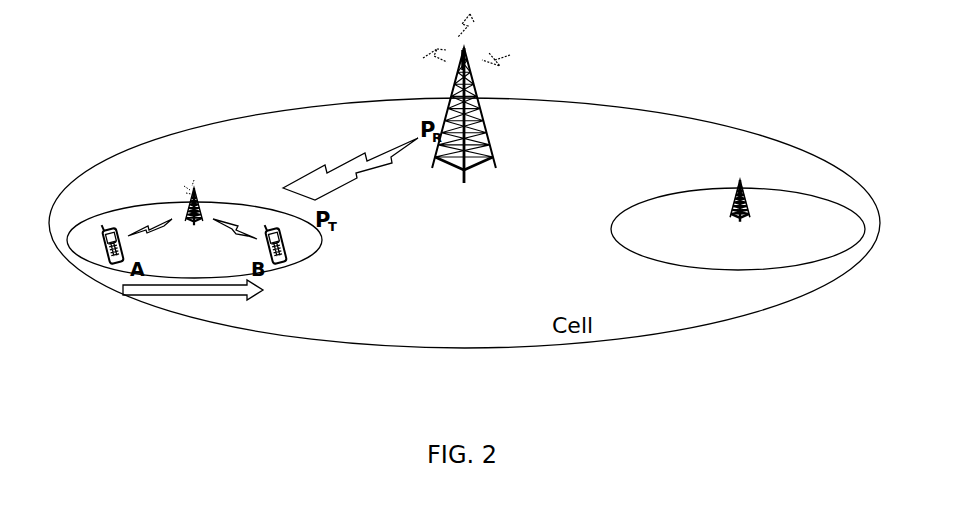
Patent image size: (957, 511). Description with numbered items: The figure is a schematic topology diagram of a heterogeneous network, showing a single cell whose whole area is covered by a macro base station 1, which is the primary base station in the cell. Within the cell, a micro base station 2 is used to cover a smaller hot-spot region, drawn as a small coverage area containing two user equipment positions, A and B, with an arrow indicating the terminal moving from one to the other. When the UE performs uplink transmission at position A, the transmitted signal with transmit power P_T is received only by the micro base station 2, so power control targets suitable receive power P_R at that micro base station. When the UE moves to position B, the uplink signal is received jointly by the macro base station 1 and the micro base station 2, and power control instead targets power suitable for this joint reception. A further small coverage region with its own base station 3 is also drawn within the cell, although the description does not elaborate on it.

The macro base station 1 is at (486, 131).
The micro base station 2 is at (195, 190).
The small base station of neighboring small cell 3 is at (741, 185).